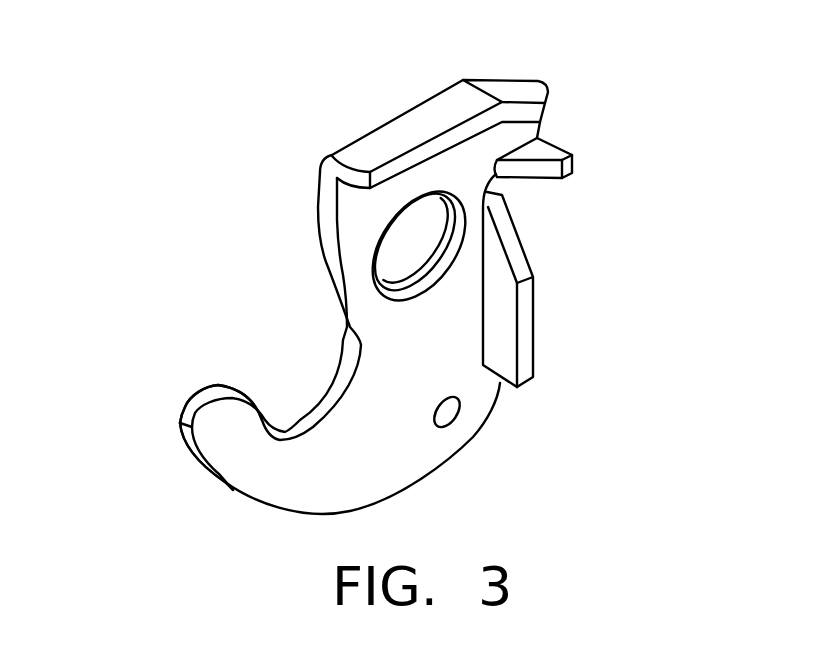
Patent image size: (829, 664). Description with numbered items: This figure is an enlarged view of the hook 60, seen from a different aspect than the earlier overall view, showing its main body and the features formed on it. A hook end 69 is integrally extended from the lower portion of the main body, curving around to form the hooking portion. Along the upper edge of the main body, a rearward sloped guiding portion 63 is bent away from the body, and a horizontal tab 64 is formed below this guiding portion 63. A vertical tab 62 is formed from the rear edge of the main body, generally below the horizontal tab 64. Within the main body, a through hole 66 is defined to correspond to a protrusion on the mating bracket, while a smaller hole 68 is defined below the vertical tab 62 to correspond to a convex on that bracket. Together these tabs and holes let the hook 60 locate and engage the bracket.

The hook 60 is at (344, 131).
The vertical tab 62 is at (507, 327).
The rearward sloped guiding portion 63 is at (515, 93).
The horizontal tab 64 is at (553, 152).
The through hole 66 is at (400, 252).
The hole 68 is at (450, 407).
The hook end 69 is at (208, 395).